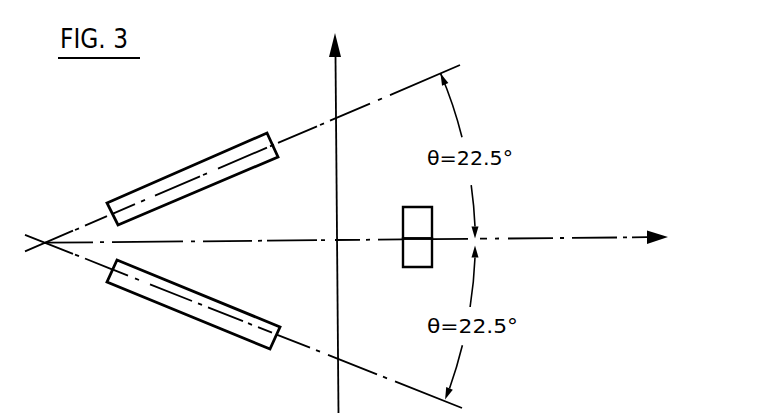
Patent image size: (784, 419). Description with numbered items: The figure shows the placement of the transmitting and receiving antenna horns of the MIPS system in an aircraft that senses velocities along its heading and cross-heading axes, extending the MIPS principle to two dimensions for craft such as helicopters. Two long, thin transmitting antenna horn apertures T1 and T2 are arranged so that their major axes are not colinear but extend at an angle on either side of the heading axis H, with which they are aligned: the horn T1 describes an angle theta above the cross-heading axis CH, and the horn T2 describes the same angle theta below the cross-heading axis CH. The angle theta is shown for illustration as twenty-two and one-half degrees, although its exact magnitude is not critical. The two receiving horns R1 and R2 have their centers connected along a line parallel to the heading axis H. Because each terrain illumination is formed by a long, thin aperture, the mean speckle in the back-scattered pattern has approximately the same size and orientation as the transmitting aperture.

The transmitting antenna horn T1 is at (192, 177).
The transmitting antenna horn T2 is at (193, 307).
The receiving horn R1 is at (412, 209).
The receiving horn R2 is at (412, 271).
The heading axis H is at (333, 207).
The cross-heading axis CH is at (374, 238).